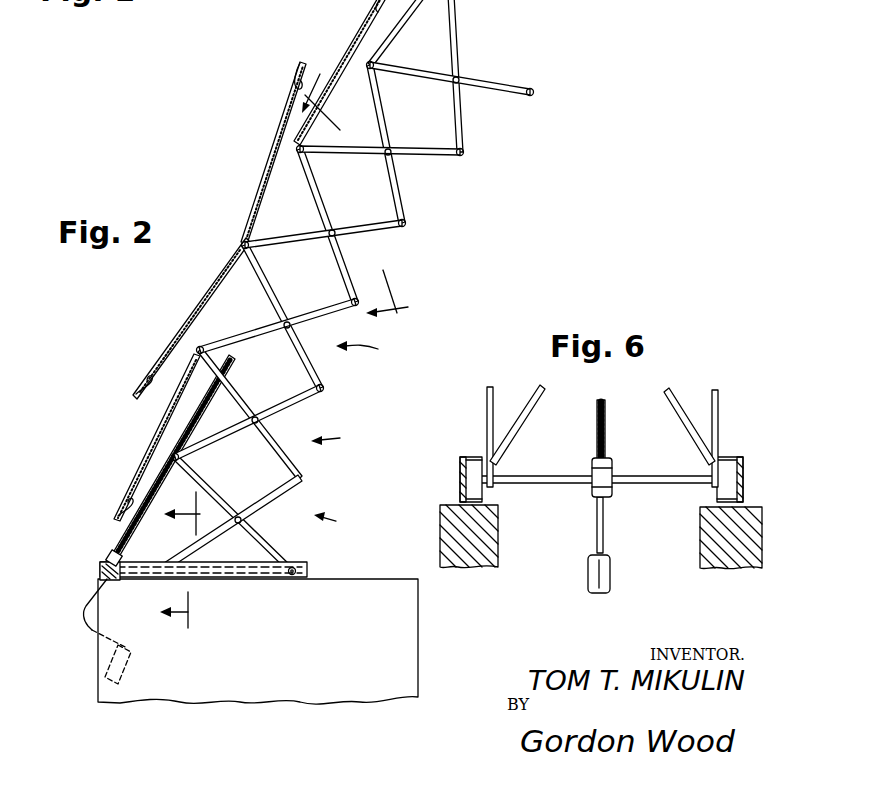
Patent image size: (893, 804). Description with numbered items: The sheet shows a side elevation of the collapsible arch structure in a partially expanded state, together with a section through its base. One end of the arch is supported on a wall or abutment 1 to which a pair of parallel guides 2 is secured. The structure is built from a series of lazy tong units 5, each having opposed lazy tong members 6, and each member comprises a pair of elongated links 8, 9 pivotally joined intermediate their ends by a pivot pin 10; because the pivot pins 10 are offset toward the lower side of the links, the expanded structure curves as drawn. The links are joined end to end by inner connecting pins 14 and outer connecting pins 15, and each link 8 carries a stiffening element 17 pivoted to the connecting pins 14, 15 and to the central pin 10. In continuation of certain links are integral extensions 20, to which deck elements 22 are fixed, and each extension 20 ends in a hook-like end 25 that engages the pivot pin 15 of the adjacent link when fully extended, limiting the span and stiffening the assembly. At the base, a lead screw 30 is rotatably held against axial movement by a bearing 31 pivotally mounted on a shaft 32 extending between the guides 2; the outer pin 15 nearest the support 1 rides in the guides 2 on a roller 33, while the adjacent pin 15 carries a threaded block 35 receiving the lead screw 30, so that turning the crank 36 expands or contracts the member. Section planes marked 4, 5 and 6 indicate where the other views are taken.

In FIG. 2, the wall or abutment 1 is at (365, 576).
In FIG. 6, the wall or abutment 1 is at (765, 520).
In FIG. 2, the parallel guides 2 is at (307, 566).
In FIG. 6, the parallel guides 2 is at (460, 493).
In FIG. 2, the section line 4- 4 is at (362, 185).
In FIG. 2, the lazy tong unit 5 is at (353, 395).
In FIG. 2, the lazy tong member 6 is at (257, 560).
In FIG. 2, the elongated link 8 is at (408, 68).
In FIG. 6, the elongated link 8 is at (487, 430).
In FIG. 2, the elongated link 9 is at (461, 28).
In FIG. 2, the pivot pin 10 is at (393, 157).
In FIG. 2, the inner connecting pin 14 is at (466, 153).
In FIG. 2, the outer connecting pin 15 is at (306, 152).
In FIG. 6, the stiffening element 17 is at (527, 418).
In FIG. 2, the extension 20 is at (338, 90).
In FIG. 2, the deck element 22 is at (152, 382).
In FIG. 2, the hook-like end 25 is at (152, 388).
In FIG. 2, the lead screw 30 is at (136, 541).
In FIG. 6, the lead screw 30 is at (606, 428).
In FIG. 2, the bearing 31 is at (112, 553).
In FIG. 6, the bearing 31 is at (613, 464).
In FIG. 2, the shaft 32 is at (100, 569).
In FIG. 6, the shaft 32 is at (652, 485).
In FIG. 6, the roller 33 is at (462, 466).
In FIG. 2, the threaded block 35 is at (172, 458).
In FIG. 2, the crank 36 is at (88, 626).
In FIG. 6, the crank 36 is at (588, 580).